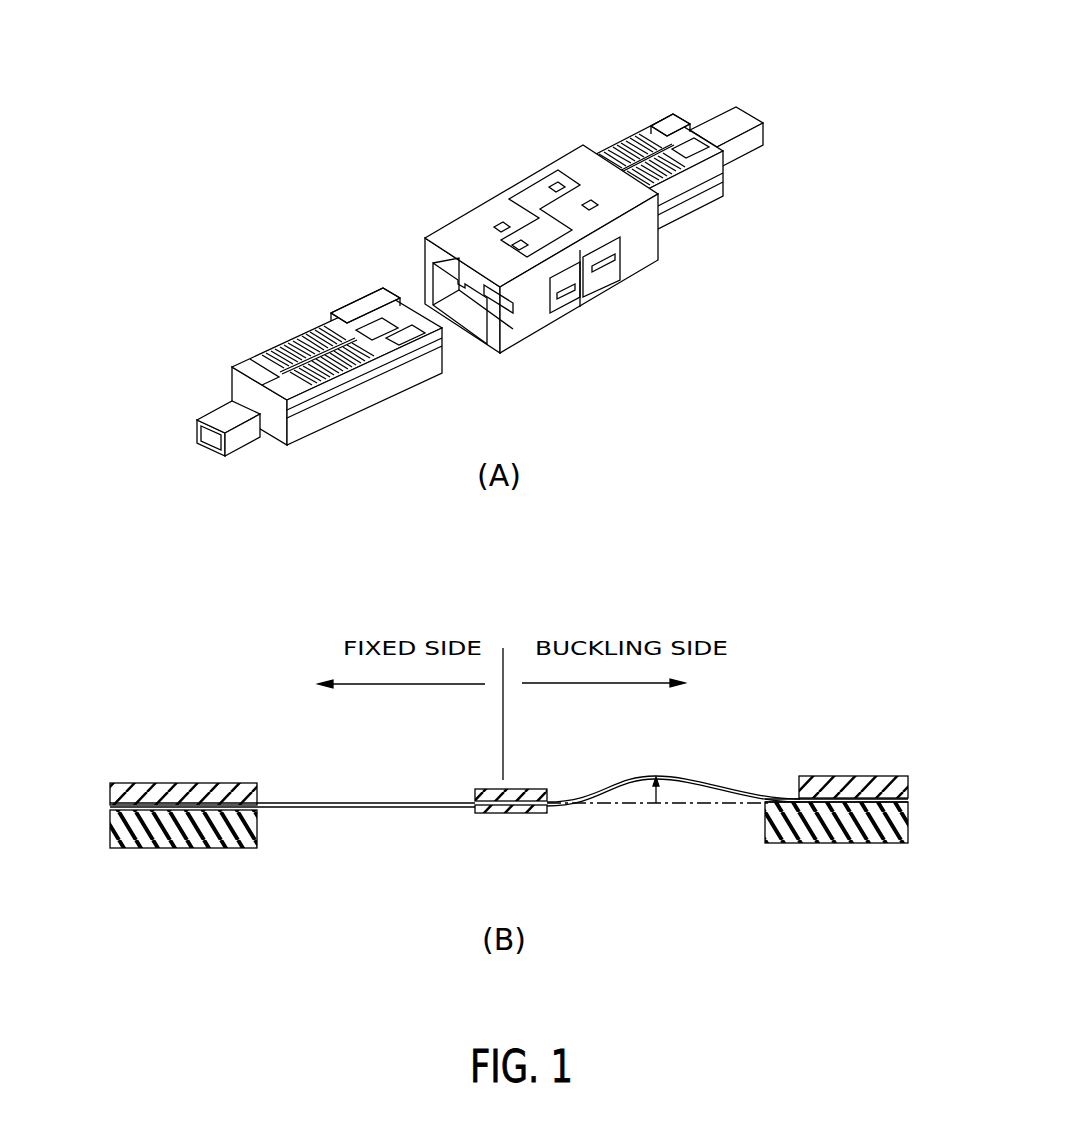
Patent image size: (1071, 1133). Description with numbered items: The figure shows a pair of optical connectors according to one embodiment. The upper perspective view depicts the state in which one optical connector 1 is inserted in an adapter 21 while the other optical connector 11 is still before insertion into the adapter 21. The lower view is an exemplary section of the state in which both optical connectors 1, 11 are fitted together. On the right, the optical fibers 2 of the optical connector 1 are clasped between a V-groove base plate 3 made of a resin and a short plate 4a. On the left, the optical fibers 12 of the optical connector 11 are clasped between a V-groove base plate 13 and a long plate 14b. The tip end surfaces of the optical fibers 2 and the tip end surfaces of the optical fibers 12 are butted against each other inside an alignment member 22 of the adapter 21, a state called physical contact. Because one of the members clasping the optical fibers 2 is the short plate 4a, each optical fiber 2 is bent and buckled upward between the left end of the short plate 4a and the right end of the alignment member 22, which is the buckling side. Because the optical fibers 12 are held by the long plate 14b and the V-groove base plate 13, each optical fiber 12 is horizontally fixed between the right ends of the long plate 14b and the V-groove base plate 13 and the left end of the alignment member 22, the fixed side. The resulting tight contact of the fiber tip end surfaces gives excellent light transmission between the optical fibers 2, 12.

The optical connector 1 is at (678, 114).
The optical connector 11 is at (305, 320).
The adapter 21 is at (510, 178).
The optical fibers 12 is at (374, 800).
The alignment member 22 is at (508, 790).
The optical fibers 2 is at (688, 778).
The short plate 4a is at (838, 775).
The V-groove base plate 3 is at (843, 845).
The V-groove base plate 13 is at (190, 850).
The long plate 14b is at (193, 780).